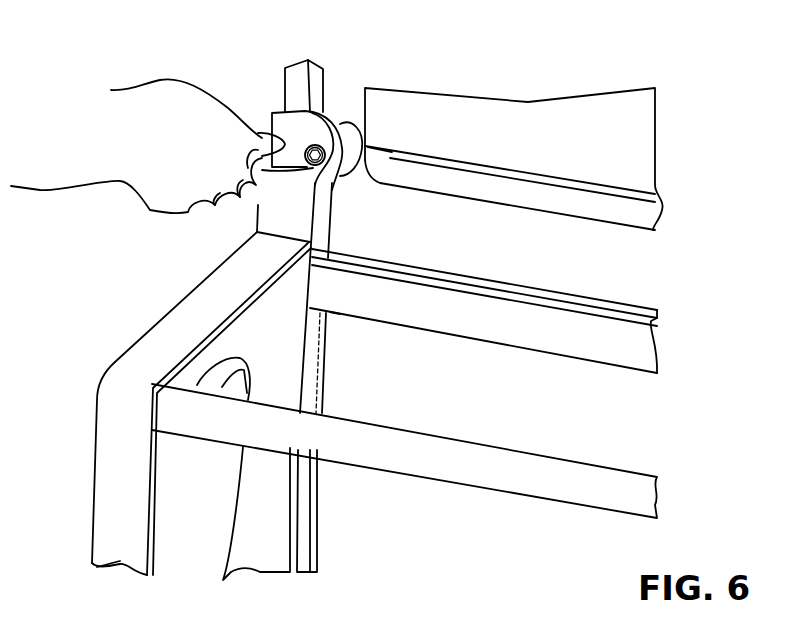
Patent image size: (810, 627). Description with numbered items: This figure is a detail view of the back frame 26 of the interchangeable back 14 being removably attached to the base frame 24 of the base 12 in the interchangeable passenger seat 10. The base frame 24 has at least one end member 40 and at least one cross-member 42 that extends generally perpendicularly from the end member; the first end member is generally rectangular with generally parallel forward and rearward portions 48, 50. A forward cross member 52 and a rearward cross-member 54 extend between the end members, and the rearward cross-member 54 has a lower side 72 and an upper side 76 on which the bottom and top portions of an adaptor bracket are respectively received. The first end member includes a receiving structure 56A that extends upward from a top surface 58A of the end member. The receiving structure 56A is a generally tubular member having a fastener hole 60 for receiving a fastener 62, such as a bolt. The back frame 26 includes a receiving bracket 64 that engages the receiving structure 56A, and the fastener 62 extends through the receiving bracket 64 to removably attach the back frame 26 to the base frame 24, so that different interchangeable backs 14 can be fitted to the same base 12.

The interchangeable passenger seat 10 is at (611, 64).
The base 12 is at (617, 305).
The interchangeable back 14 is at (632, 150).
The base frame 24 is at (632, 500).
The back frame 26 is at (320, 76).
The end member 40 is at (178, 328).
The cross-member 42 is at (464, 325).
The forward portion 48 is at (100, 550).
The rearward portion 50 is at (314, 360).
The forward cross member 52 is at (508, 462).
The rearward cross-member 54 is at (553, 344).
The receiving structure 56A is at (297, 180).
The top surface 58A is at (217, 307).
The fastener hole 60 is at (352, 125).
The fastener 62 is at (313, 146).
The receiving bracket 64 is at (368, 178).
The lower side 72 is at (383, 313).
The upper side 76 is at (432, 275).